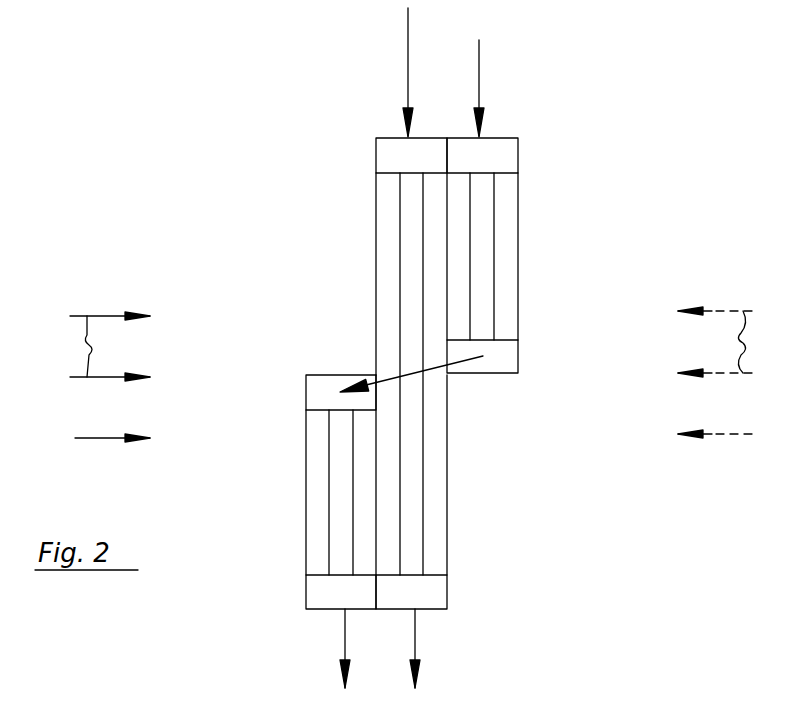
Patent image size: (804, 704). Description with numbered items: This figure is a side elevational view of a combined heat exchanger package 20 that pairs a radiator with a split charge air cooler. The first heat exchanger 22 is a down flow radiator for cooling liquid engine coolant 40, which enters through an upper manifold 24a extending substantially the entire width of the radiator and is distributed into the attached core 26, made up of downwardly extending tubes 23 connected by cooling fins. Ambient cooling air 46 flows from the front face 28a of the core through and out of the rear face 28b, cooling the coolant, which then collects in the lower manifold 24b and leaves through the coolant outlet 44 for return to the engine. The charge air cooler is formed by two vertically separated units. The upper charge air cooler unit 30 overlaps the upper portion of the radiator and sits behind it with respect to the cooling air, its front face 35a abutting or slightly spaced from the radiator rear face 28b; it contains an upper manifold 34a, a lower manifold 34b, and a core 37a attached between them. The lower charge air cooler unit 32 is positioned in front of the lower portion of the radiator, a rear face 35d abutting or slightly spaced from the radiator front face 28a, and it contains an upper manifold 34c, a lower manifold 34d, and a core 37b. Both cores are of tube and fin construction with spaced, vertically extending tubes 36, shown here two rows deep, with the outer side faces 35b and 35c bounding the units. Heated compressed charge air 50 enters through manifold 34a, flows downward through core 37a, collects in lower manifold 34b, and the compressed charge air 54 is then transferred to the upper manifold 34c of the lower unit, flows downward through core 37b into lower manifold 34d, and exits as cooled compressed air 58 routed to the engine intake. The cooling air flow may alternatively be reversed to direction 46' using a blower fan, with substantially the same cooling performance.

The combined heat exchanger package 20 is at (228, 158).
The first heat exchanger 22 is at (362, 100).
The tubes 23 is at (382, 327).
The upper manifold 24a is at (385, 158).
The lower manifold 24b is at (438, 600).
The core 26 is at (415, 465).
The front face 28a is at (376, 268).
The rear face 28b is at (447, 520).
The upper charge air cooler unit 30 is at (599, 154).
The lower charge air cooler unit 32 is at (258, 501).
The upper manifold 34a is at (503, 142).
The lower manifold 34b is at (511, 358).
The upper manifold 34c is at (322, 392).
The lower manifold 34d is at (318, 597).
The front face 35a is at (443, 222).
The side wall 35b is at (518, 312).
The side wall 35c is at (306, 436).
The rear face 35d is at (380, 530).
The tubes 36 is at (508, 227).
The core 37a is at (526, 198).
The core 37b is at (303, 470).
The engine coolant 40 is at (408, 24).
The coolant outlet 44 is at (418, 642).
The ambient cooling air 46 is at (86, 393).
The reversed cooling air direction 46' is at (722, 403).
The heated compressed charge air 50 is at (479, 52).
The compressed charge air 54 is at (432, 366).
The cooled compressed air 58 is at (345, 637).